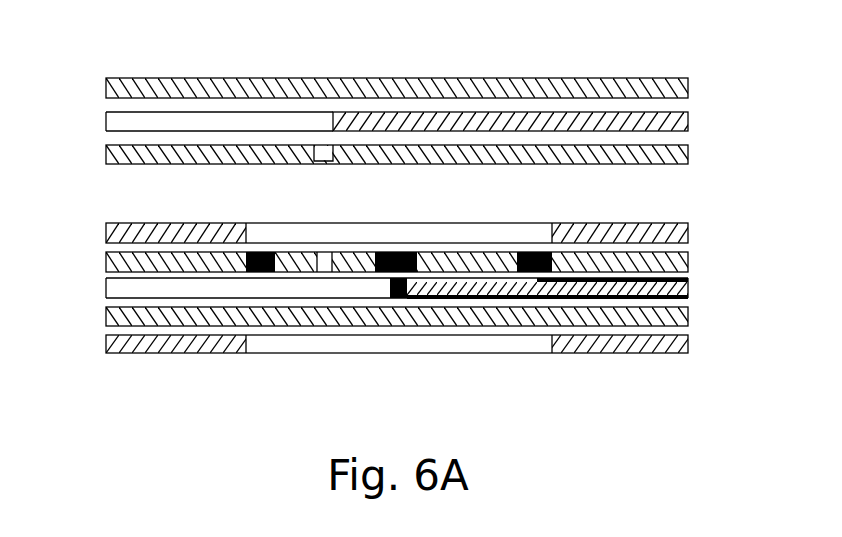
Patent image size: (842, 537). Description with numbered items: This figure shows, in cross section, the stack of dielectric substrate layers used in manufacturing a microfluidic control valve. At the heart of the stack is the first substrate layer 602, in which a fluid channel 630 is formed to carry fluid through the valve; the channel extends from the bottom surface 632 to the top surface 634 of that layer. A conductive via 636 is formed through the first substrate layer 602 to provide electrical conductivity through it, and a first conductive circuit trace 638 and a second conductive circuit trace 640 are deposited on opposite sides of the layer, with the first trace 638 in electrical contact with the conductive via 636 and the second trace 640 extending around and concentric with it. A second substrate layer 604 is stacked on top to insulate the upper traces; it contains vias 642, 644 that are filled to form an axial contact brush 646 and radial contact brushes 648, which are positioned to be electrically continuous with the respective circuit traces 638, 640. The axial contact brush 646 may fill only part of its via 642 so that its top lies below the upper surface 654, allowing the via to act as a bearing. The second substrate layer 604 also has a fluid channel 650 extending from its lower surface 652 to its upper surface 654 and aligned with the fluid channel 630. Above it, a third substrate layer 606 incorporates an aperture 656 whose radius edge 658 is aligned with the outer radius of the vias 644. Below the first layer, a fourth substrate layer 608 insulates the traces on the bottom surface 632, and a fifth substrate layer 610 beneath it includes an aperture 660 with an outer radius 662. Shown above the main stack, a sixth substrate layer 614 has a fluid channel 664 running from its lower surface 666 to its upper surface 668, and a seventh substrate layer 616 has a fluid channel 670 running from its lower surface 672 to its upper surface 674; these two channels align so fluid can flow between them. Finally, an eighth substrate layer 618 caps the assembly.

The first substrate layer 602 is at (690, 289).
The second substrate layer 604 is at (690, 260).
The third substrate layer 606 is at (690, 234).
The fourth substrate layer 608 is at (690, 315).
The fifth substrate layer 610 is at (690, 344).
The sixth substrate layer 614 is at (690, 154).
The seventh substrate layer 616 is at (690, 122).
The eighth substrate layer 618 is at (690, 88).
The fluid channel 630 is at (117, 288).
The bottom surface 632 is at (106, 298).
The top surface 634 is at (106, 278).
The conductive via 636 is at (390, 293).
The first conductive circuit trace 638 is at (508, 298).
The second conductive circuit trace 640 is at (610, 298).
The via 642 is at (388, 241).
The via 644 is at (280, 238).
The axial contact brush 646 is at (407, 258).
The radial contact brush 648 is at (263, 252).
The fluid channel 650 is at (325, 265).
The lower surface 652 is at (290, 268).
The upper surface 654 is at (310, 252).
The aperture 656 is at (450, 232).
The radius edge 658 is at (255, 235).
The aperture 660 is at (420, 345).
The outer radius 662 is at (245, 335).
The fluid channel 664 is at (326, 155).
The lower surface 666 is at (255, 164).
The upper surface 668 is at (300, 145).
The fluid channel 670 is at (117, 120).
The lower surface 672 is at (106, 131).
The upper surface 674 is at (106, 112).